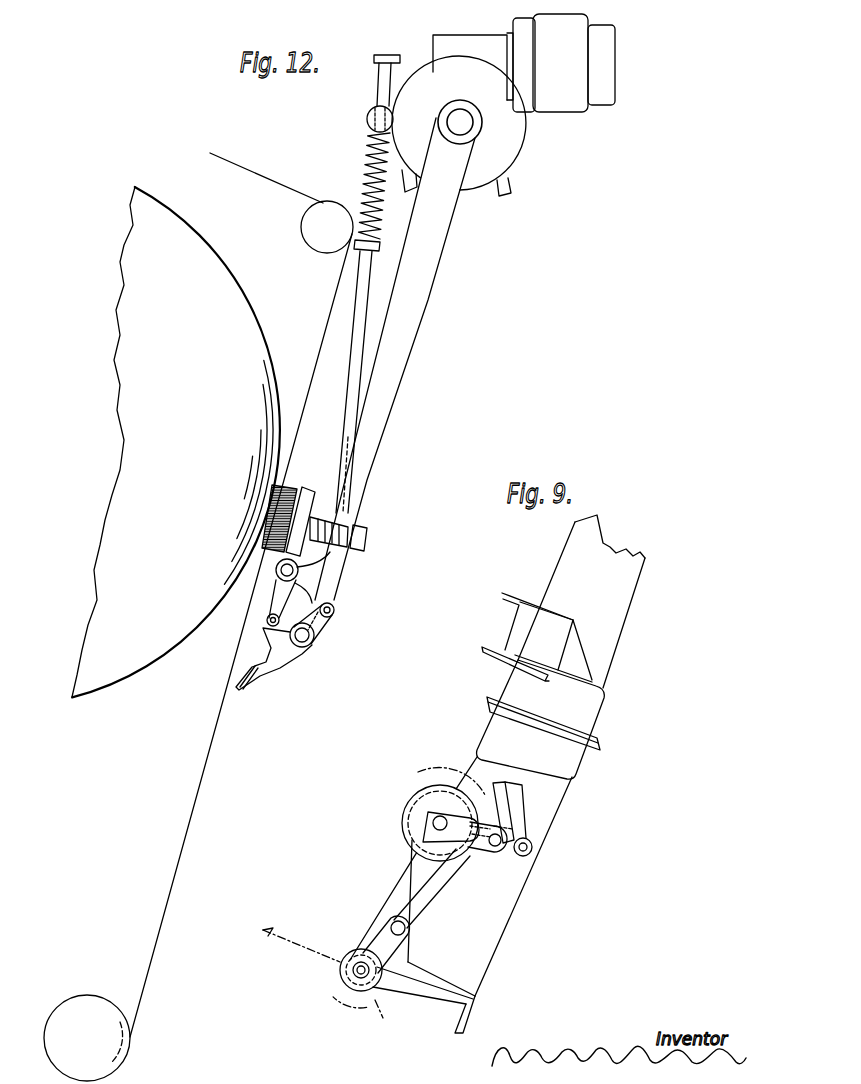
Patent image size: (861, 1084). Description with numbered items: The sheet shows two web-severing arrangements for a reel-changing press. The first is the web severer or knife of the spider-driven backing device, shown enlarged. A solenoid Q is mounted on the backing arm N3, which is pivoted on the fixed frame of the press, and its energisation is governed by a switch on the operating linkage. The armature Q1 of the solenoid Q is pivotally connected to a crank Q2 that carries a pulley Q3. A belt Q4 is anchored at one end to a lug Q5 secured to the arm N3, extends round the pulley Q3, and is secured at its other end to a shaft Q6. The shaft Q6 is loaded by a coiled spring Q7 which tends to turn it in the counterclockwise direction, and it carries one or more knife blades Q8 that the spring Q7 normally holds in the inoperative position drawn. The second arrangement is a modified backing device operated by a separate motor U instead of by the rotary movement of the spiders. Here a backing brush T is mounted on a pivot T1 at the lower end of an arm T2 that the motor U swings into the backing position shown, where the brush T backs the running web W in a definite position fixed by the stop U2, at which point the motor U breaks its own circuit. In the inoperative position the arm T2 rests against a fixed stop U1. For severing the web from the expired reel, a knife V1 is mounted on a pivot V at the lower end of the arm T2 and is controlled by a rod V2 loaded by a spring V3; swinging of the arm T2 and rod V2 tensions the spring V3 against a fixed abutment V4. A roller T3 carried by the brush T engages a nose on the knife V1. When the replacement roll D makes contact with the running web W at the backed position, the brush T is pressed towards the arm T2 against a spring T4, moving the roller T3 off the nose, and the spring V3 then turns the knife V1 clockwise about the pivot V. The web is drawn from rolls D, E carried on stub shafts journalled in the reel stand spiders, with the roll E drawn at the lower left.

In FIG. 12, the running web W is at (241, 160).
In FIG. 12, the roll of web D is at (122, 667).
In FIG. 12, the roll of web E is at (82, 1005).
In FIG. 12, the motor U is at (563, 105).
In FIG. 12, the fixed stop U1 is at (510, 188).
In FIG. 12, the stop U2 is at (411, 191).
In FIG. 12, the pivot V is at (255, 681).
In FIG. 12, the knife V1 is at (306, 642).
In FIG. 12, the rod V2 is at (357, 342).
In FIG. 12, the spring V3 is at (365, 183).
In FIG. 12, the fixed abutment V4 is at (371, 110).
In FIG. 12, the backing brush T is at (293, 481).
In FIG. 12, the pivot T1 is at (298, 571).
In FIG. 12, the arm T2 is at (392, 380).
In FIG. 12, the roller T3 is at (265, 621).
In FIG. 12, the spring T4 is at (317, 515).
In FIG. 9, the arm N3 is at (622, 607).
In FIG. 9, the solenoid Q is at (588, 717).
In FIG. 9, the armature Q1 is at (515, 807).
In FIG. 9, the crank Q2 is at (524, 857).
In FIG. 9, the pulley Q3 is at (422, 810).
In FIG. 9, the belt Q4 is at (440, 888).
In FIG. 9, the lug Q5 is at (382, 942).
In FIG. 9, the shaft Q6 is at (340, 973).
In FIG. 9, the coiled spring Q7 is at (332, 983).
In FIG. 9, the knife blades Q8 is at (428, 995).